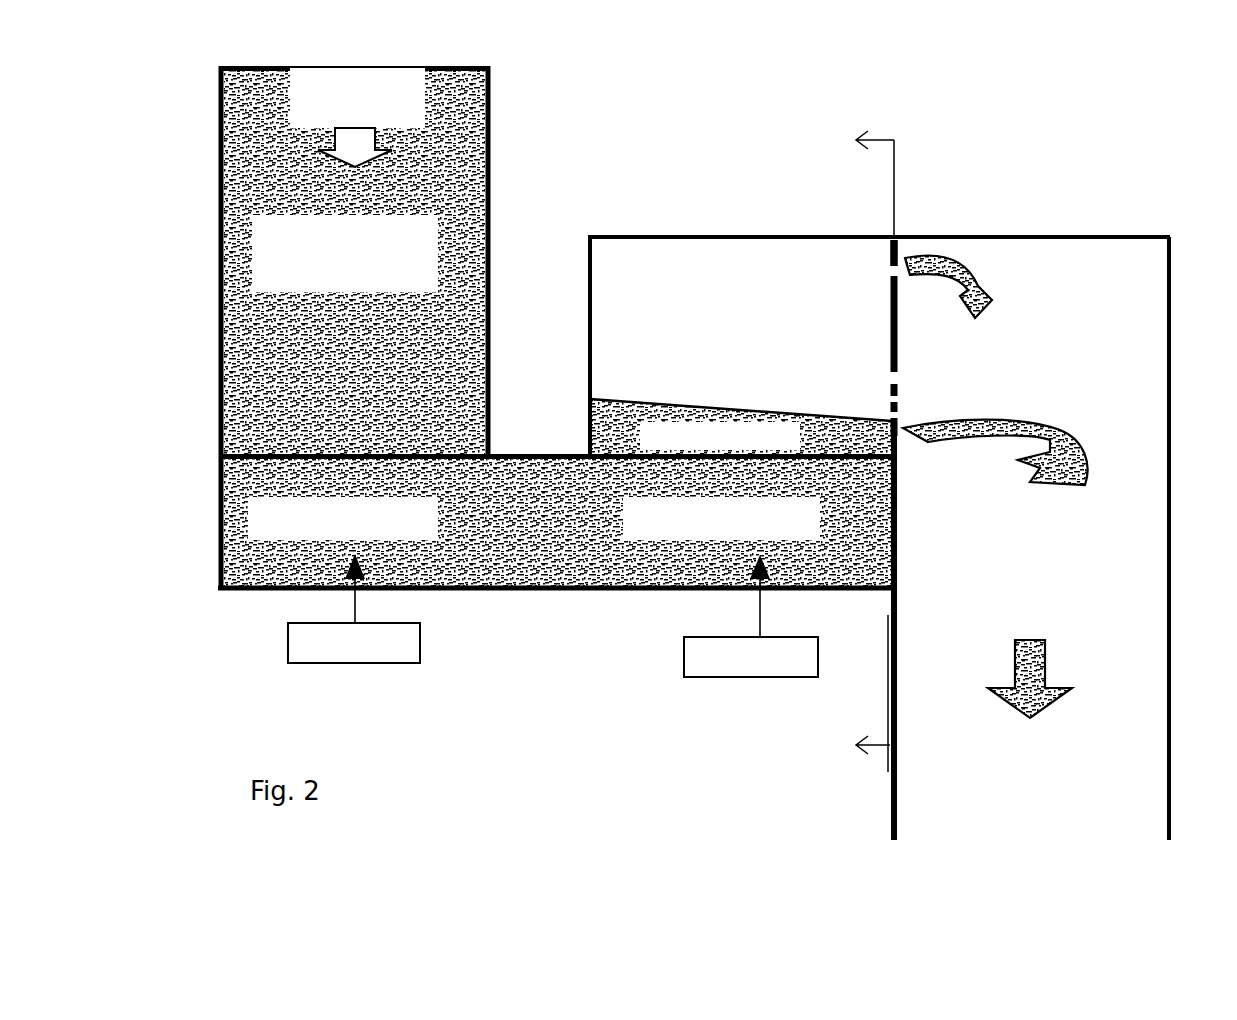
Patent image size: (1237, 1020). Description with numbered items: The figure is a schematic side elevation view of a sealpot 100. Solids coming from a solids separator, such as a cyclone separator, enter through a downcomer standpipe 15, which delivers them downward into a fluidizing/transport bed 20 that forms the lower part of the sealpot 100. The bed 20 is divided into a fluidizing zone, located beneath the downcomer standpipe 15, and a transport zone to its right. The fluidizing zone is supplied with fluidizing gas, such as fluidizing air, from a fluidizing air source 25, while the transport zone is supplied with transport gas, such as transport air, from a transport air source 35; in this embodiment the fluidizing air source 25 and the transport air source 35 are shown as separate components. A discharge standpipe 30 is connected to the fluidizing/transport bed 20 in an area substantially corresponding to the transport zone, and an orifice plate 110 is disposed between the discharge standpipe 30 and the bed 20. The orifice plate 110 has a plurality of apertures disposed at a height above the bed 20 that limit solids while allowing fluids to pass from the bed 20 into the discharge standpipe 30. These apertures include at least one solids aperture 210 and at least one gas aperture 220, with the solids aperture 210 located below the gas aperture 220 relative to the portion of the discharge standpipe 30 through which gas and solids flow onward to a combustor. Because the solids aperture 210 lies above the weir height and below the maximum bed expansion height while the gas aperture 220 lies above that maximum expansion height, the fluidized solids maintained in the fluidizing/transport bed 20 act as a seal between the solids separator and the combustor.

The sealpot 100 is at (192, 152).
The downcomer standpipe 15 is at (490, 206).
The fluidizing/transport bed 20 is at (540, 591).
The fluidizing air source 25 is at (288, 648).
The transport air source 35 is at (684, 650).
The solids aperture 210 is at (873, 404).
The orifice plate 110 is at (872, 360).
The gas aperture 220 is at (873, 270).
The discharge standpipe 30 is at (1170, 353).